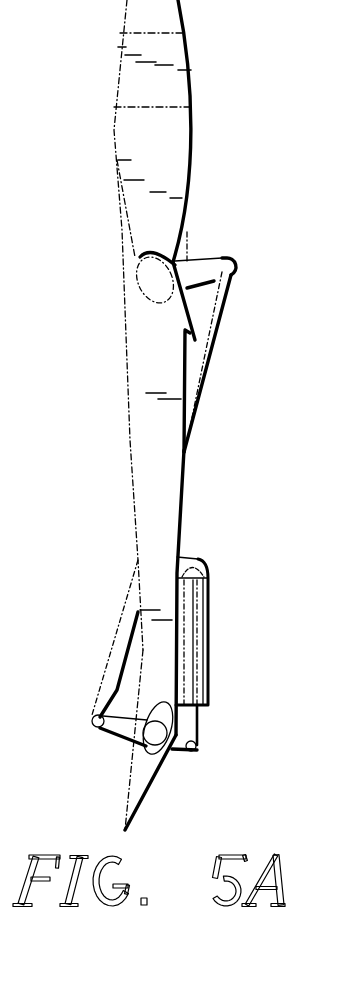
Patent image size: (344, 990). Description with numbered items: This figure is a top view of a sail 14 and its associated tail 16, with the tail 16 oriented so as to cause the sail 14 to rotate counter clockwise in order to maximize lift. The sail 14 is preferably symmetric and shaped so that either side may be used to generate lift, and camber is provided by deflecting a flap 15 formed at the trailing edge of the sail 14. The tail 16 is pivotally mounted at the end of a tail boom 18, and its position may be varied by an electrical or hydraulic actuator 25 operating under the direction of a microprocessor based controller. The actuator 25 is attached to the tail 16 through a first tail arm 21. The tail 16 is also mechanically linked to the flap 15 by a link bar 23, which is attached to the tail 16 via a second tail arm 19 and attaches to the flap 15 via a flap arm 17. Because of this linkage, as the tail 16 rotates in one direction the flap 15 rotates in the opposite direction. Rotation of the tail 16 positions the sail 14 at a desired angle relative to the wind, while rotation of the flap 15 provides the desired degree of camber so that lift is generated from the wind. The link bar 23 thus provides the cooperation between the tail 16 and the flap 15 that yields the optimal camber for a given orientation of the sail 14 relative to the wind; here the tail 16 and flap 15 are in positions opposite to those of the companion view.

The sail 14 is at (116, 158).
The flap 15 is at (140, 343).
The tail 16 is at (148, 804).
The flap arm 17 is at (208, 253).
The tail boom 18 is at (126, 414).
The second tail arm 19 is at (114, 742).
The first tail arm 21 is at (190, 751).
The link bar 23 is at (205, 392).
The actuator 25 is at (211, 613).